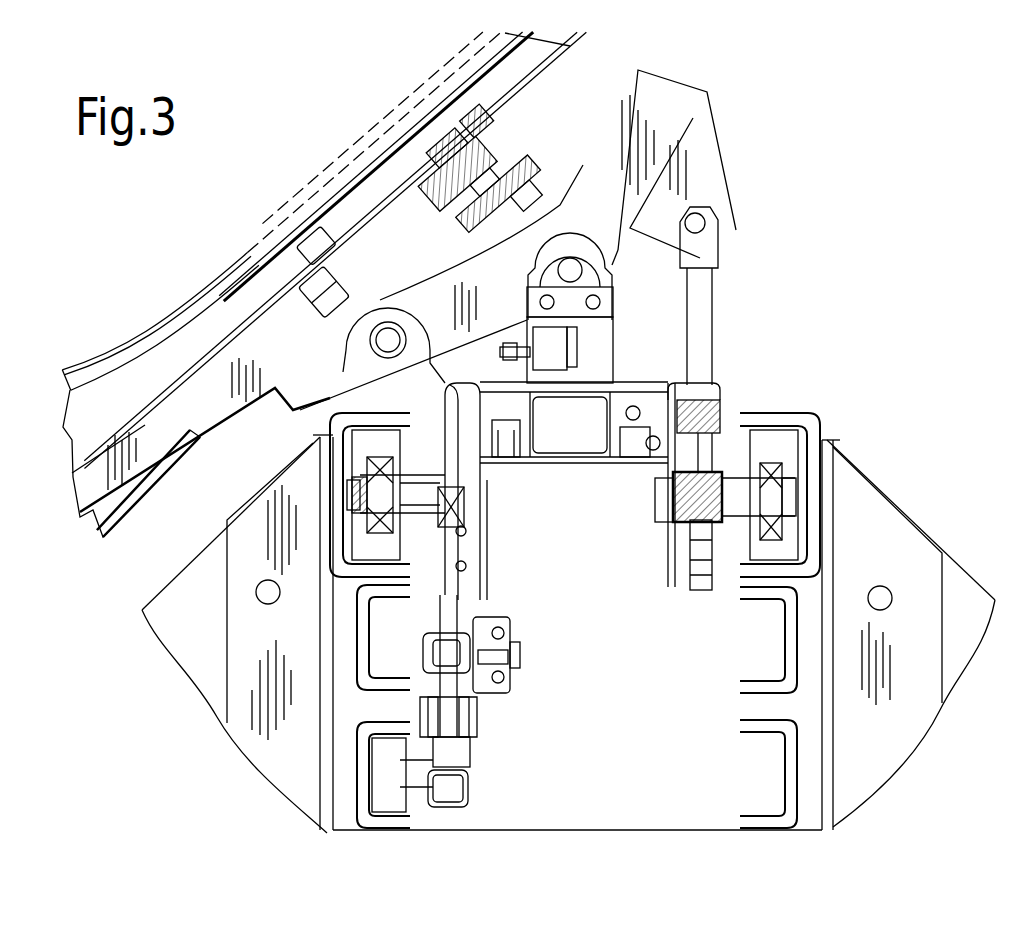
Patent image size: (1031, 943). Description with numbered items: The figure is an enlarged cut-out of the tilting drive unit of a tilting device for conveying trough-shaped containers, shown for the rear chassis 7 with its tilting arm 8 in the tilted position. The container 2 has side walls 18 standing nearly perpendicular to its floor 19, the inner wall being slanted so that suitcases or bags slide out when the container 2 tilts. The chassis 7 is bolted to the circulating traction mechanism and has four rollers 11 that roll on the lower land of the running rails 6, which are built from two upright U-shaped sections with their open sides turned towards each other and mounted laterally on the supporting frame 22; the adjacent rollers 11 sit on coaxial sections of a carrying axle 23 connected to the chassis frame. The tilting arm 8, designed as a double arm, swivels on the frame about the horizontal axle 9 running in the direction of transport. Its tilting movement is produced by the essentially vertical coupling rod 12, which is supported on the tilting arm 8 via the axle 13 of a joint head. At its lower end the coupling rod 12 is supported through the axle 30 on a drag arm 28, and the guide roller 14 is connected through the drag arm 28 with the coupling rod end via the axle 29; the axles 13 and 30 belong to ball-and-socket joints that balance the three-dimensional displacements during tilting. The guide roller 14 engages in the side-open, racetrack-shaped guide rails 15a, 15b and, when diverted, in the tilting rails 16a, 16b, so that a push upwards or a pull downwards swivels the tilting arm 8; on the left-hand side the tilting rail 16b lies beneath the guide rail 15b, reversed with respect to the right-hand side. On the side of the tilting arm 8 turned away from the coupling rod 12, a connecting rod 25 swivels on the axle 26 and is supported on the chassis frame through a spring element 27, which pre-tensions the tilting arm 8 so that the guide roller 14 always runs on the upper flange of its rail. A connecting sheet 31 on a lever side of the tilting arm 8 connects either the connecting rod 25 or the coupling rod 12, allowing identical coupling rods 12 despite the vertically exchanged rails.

The container 2 is at (400, 143).
The running rail 6 is at (810, 428).
The chassis 7 is at (527, 507).
The tilting arm 8 is at (647, 110).
The axle 9 is at (570, 268).
The roller 11 is at (775, 450).
The coupling rod 12 is at (345, 345).
The axle 13 is at (330, 310).
The guide roller 14 is at (380, 803).
The guide rail 15a is at (793, 783).
The guide rail 15b is at (363, 660).
The tilting rail 16a is at (797, 597).
The tilting rail 16b is at (360, 783).
The side wall 18 is at (115, 353).
The floor 19 is at (307, 230).
The supporting frame 22 is at (920, 707).
The carrying axle 23 is at (680, 515).
The connecting rod 25 is at (707, 350).
The axle 26 is at (707, 225).
The spring element 27 is at (722, 413).
The drag arm 28 is at (472, 752).
The axle 29 is at (507, 690).
The axle 30 is at (370, 713).
The connecting sheet 31 is at (688, 185).